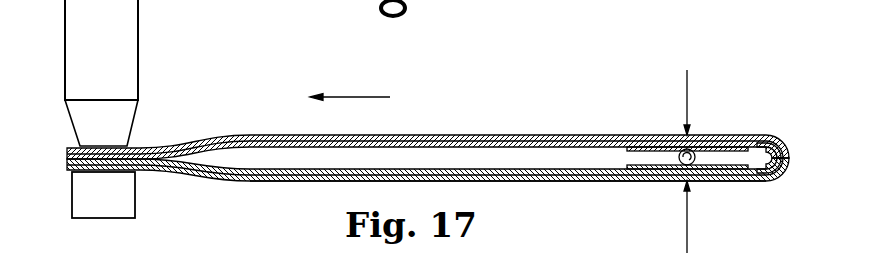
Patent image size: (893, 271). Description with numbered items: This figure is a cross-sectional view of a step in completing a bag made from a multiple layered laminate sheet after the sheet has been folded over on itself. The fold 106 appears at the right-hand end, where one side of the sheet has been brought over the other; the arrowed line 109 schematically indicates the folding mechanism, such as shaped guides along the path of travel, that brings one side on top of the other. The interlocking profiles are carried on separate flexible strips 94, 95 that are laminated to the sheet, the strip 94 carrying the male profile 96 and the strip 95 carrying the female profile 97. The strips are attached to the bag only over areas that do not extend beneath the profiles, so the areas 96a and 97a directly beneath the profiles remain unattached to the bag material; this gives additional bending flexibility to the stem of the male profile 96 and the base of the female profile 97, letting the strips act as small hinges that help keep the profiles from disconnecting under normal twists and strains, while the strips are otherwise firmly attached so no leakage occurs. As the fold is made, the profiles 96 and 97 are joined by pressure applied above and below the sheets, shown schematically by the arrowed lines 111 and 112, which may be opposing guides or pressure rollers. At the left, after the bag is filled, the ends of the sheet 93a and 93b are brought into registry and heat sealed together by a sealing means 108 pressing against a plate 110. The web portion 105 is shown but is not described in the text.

The end of the sheet 93a is at (67, 170).
The end of the sheet 93b is at (67, 150).
The strip 94 is at (750, 179).
The strip 95 is at (752, 136).
The male profile 96 is at (702, 179).
The area directly beneath the male profile 96a is at (686, 168).
The female profile 97 is at (708, 137).
The area directly beneath the female profile 97a is at (681, 139).
The strip web 105 is at (535, 182).
The fold 106 is at (792, 157).
The sealing means 108 is at (130, 65).
The arrowed line 109 is at (347, 97).
The plate 110 is at (128, 199).
The arrowed line 111 is at (687, 85).
The arrowed line 112 is at (687, 242).